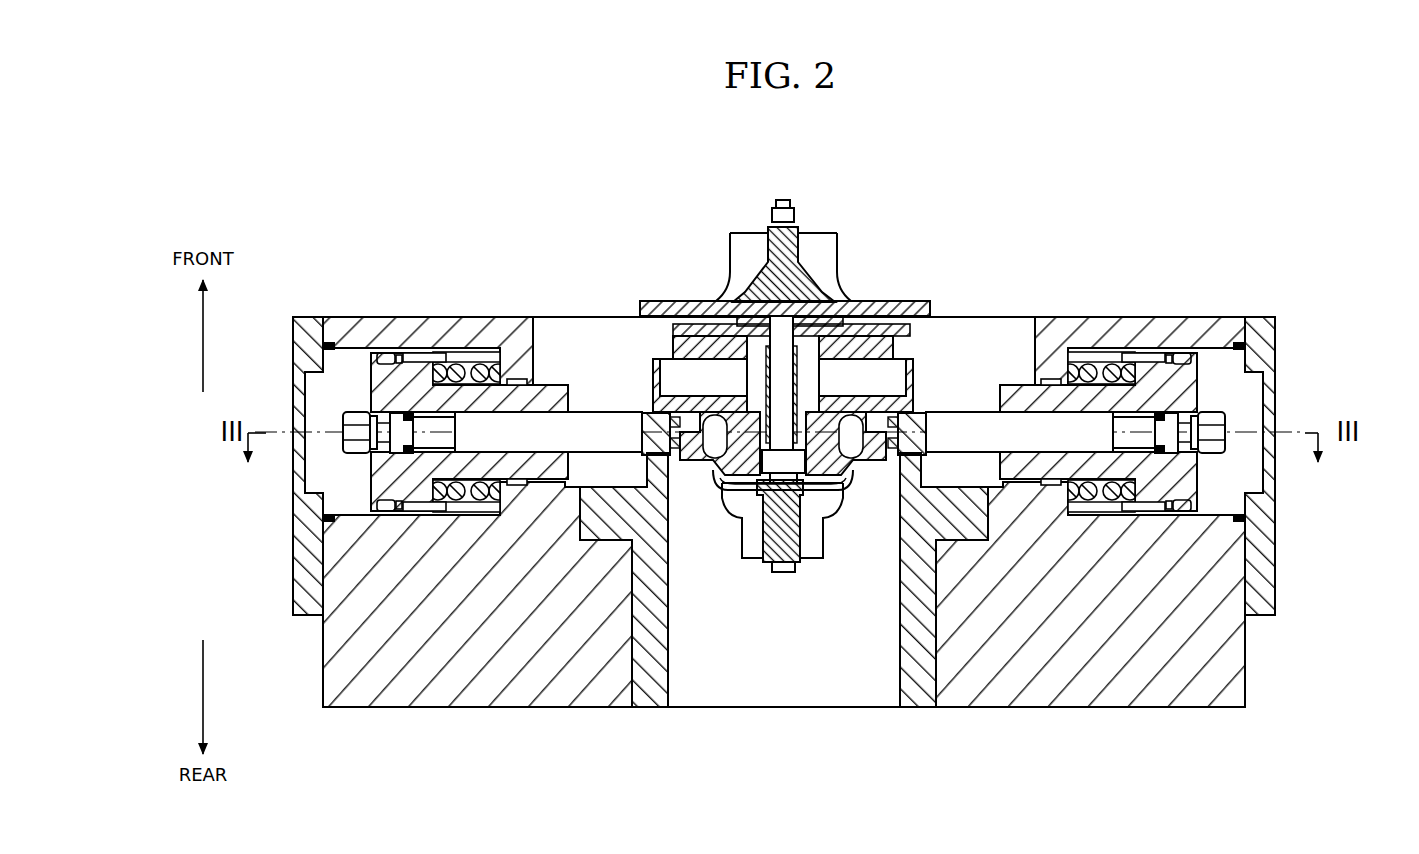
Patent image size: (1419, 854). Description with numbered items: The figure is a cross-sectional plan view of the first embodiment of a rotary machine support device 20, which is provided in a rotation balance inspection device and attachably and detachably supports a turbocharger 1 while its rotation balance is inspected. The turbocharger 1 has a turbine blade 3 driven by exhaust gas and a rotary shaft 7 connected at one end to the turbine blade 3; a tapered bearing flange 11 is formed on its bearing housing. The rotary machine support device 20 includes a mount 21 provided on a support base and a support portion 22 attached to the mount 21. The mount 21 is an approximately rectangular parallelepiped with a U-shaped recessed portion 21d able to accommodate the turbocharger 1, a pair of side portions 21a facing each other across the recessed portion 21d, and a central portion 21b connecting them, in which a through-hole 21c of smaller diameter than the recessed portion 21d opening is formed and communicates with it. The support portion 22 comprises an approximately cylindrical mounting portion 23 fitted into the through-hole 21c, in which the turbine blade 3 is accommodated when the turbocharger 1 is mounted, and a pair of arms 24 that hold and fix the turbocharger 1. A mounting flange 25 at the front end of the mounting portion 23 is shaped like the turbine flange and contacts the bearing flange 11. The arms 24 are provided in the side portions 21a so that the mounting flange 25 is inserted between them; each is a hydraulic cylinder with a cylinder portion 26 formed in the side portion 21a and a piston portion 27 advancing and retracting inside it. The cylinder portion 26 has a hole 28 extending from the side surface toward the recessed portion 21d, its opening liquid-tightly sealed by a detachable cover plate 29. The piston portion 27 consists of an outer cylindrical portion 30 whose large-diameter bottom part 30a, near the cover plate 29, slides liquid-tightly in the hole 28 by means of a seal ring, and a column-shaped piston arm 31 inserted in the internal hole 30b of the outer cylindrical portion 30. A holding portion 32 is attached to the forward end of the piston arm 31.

The turbocharger 1 is at (714, 256).
The turbine blade 3 is at (757, 548).
The rotary shaft 7 is at (788, 395).
The bearing flange 11 is at (648, 413).
The rotary machine support device 20 is at (1262, 283).
The mount 21 is at (535, 709).
The side portions 21a is at (386, 322).
The central portion 21b is at (1003, 695).
The through-hole 21c is at (937, 625).
The recessed portion 21d is at (600, 350).
The support portion 22 is at (635, 607).
The mounting portion 23 is at (622, 670).
The arms 24 is at (548, 375).
The mounting flange 25 is at (690, 447).
The cylinder portion 26 is at (380, 530).
The piston portion 27 is at (513, 500).
The hole 28 is at (378, 508).
The cover plate 29 is at (298, 396).
The outer cylindrical portion 30 is at (452, 482).
The bottom part 30a is at (380, 472).
The internal hole 30b is at (477, 450).
The piston arm 31 is at (522, 420).
The holding portion 32 is at (670, 460).